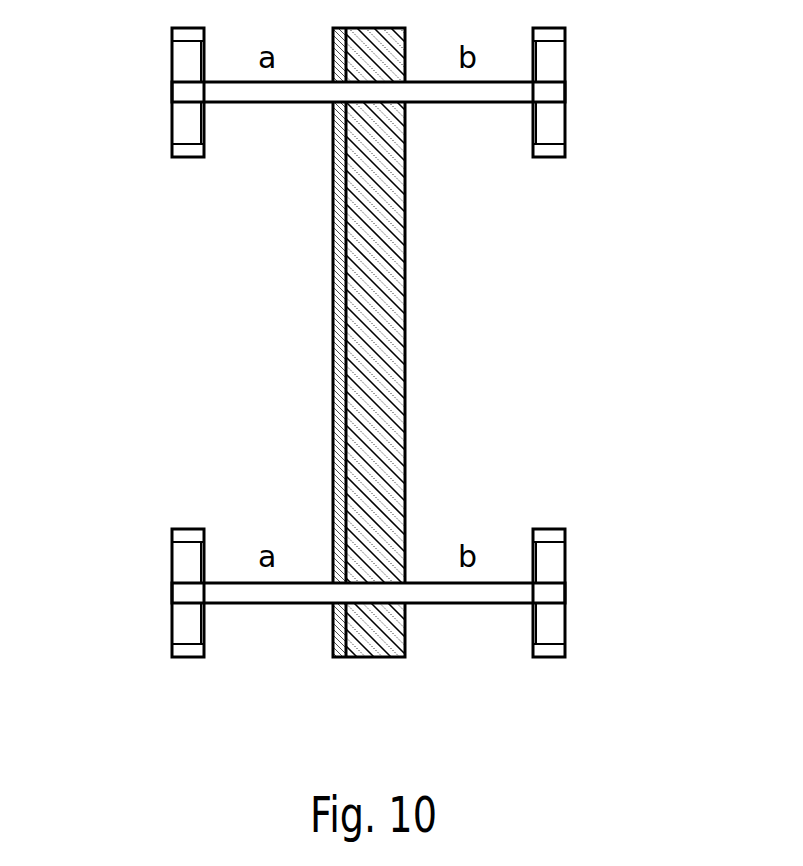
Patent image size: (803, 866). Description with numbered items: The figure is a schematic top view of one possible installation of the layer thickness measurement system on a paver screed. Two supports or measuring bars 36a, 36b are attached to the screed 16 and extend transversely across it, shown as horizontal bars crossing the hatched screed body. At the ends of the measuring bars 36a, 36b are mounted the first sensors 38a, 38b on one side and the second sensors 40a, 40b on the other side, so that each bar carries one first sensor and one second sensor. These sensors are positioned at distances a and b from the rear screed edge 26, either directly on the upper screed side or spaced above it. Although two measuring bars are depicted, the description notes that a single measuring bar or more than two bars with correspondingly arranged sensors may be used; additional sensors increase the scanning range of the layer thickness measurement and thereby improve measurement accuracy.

The screed 16 is at (380, 312).
The rear screed edge 26 is at (338, 366).
The measuring bar 36a is at (467, 603).
The measuring bar 36b is at (270, 103).
The first sensor 38a is at (172, 620).
The first sensor 38b is at (172, 62).
The second sensor 40a is at (565, 620).
The second sensor 40b is at (565, 61).